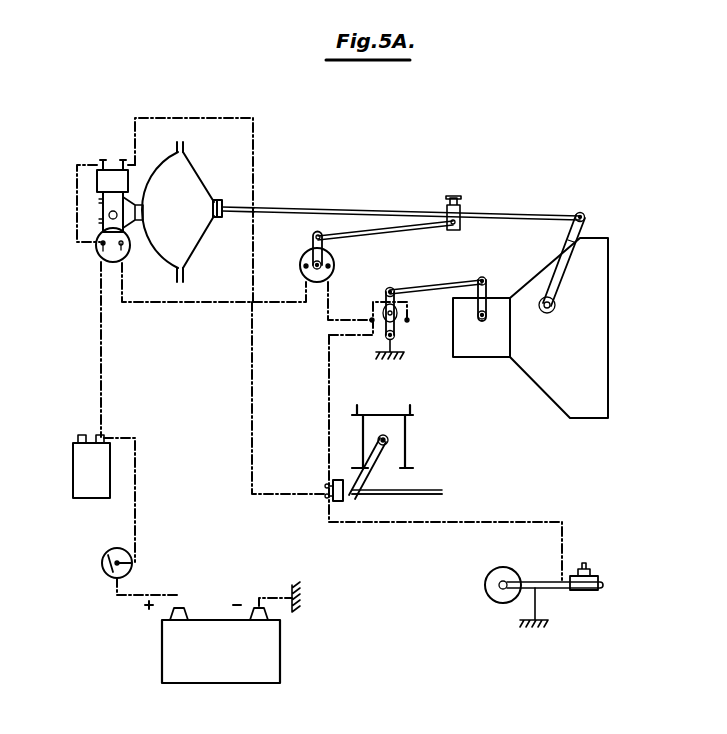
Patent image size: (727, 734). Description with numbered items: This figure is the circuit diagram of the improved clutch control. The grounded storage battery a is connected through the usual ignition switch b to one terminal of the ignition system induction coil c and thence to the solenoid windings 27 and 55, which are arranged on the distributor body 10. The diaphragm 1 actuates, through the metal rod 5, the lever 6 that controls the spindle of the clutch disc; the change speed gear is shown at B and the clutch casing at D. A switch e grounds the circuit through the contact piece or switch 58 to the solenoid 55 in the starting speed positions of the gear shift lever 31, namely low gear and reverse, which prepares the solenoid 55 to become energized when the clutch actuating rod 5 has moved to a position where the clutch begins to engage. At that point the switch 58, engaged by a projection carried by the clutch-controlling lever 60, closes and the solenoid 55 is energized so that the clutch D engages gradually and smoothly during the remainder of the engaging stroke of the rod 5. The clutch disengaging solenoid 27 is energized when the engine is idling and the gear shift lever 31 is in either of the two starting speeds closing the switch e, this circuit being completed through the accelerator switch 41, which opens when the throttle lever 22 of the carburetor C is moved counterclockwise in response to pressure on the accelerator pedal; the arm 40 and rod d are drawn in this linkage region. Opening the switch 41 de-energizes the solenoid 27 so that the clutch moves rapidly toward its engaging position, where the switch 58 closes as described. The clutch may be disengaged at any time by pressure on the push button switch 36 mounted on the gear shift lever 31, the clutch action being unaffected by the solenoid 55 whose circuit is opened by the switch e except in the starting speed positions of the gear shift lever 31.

The diaphragm 1 is at (198, 170).
The metal rod 5 is at (330, 211).
The lever 6 is at (586, 224).
The body 10 is at (103, 208).
The throttle lever 22 is at (395, 488).
The clutch disengaging solenoid 27 is at (103, 158).
The gear shift lever 31 is at (584, 591).
The push button switch 36 is at (588, 570).
The arm 40 is at (352, 488).
The accelerator switch 41 is at (340, 502).
The solenoid 55 is at (108, 252).
The contact piece 58 is at (334, 263).
The clutch-controlling lever 60 is at (330, 239).
The storage battery a is at (230, 665).
The ignition switch b is at (104, 556).
The ignition system induction coil c is at (76, 467).
The rod d is at (385, 495).
The switch e is at (384, 334).
The change speed gear B is at (483, 344).
The carburetor C is at (408, 436).
The clutch casing D is at (575, 400).